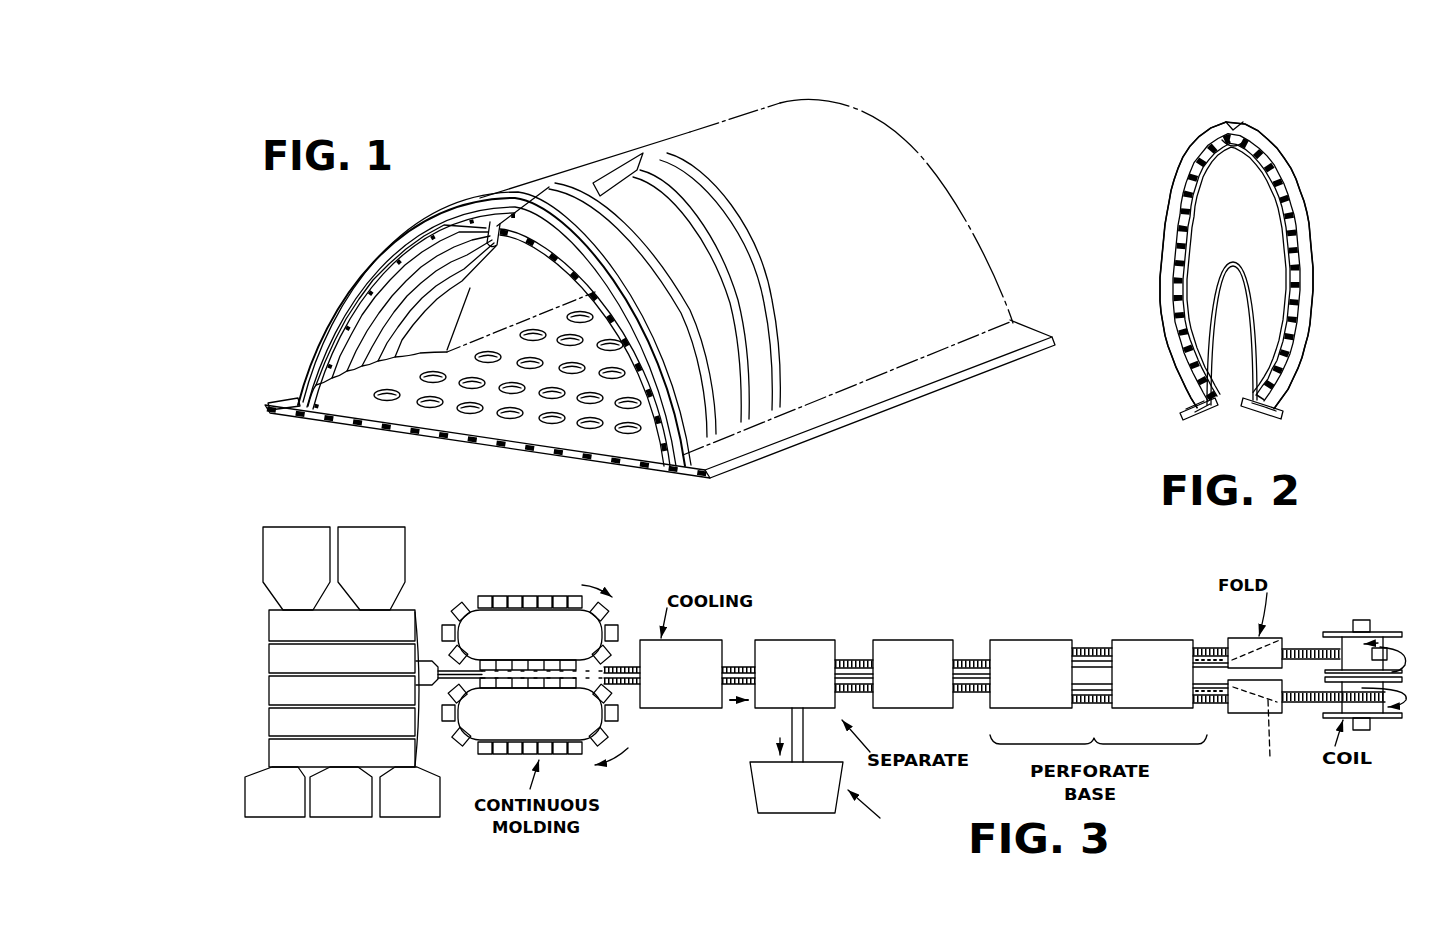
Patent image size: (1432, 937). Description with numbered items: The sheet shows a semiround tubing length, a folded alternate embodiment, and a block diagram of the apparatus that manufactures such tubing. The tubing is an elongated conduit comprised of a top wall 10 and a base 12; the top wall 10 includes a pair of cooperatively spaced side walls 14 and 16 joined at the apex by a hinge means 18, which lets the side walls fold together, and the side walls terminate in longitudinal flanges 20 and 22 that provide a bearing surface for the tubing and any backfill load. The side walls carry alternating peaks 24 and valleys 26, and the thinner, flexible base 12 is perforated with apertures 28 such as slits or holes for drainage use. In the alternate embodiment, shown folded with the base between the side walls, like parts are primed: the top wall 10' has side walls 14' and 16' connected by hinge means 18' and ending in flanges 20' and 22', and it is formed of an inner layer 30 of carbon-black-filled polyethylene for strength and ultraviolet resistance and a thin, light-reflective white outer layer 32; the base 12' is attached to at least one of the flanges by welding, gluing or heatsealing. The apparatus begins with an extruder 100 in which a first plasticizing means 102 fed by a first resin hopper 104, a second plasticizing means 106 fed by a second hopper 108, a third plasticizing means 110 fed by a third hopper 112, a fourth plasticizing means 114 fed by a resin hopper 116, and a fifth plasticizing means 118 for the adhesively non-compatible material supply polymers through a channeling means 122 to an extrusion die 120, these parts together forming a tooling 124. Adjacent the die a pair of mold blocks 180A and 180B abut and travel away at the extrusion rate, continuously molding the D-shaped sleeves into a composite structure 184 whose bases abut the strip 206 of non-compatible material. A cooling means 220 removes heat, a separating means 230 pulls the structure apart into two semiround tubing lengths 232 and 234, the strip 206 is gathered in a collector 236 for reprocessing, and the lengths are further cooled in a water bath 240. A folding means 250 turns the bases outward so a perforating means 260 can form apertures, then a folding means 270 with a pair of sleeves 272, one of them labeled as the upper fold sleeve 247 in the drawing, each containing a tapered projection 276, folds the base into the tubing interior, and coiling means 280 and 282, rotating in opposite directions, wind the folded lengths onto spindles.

In FIG. 1, the top wall 10 is at (451, 255).
In FIG. 3, the top wall 10 is at (1104, 673).
In FIG. 1, the base 12 is at (487, 449).
In FIG. 3, the base 12 is at (1066, 673).
In FIG. 1, the side wall 14 is at (494, 329).
In FIG. 1, the side wall 16 is at (855, 211).
In FIG. 1, the hinge means 18 is at (585, 176).
In FIG. 1, the flange 20 is at (276, 361).
In FIG. 1, the flange 22 is at (869, 406).
In FIG. 1, the peaks 24 is at (707, 258).
In FIG. 1, the valleys 26 is at (685, 195).
In FIG. 1, the apertures 28 is at (428, 408).
In FIG. 2, the top wall 10' is at (1261, 248).
In FIG. 2, the base 12' is at (1232, 296).
In FIG. 2, the side wall 14' is at (1157, 265).
In FIG. 2, the side wall 16' is at (1275, 265).
In FIG. 2, the hinge means 18' is at (1262, 116).
In FIG. 2, the flange 20' is at (1155, 393).
In FIG. 2, the flange 22' is at (1305, 394).
In FIG. 2, the inner layer 30 is at (1281, 234).
In FIG. 2, the outer layer 32 is at (1286, 200).
In FIG. 3, the extruder 100 is at (452, 831).
In FIG. 3, the first plasticizing means 102 is at (270, 620).
In FIG. 3, the first resin hopper 104 is at (300, 525).
In FIG. 3, the second plasticizing means 106 is at (270, 656).
In FIG. 3, the second hopper 108 is at (372, 525).
In FIG. 3, the third plasticizing means 110 is at (270, 689).
In FIG. 3, the third hopper 112 is at (268, 782).
In FIG. 3, the fourth plasticizing means 114 is at (270, 721).
In FIG. 3, the resin hopper 116 is at (332, 818).
In FIG. 3, the fifth plasticizing means 118 is at (270, 753).
In FIG. 3, the extrusion die 120 is at (440, 683).
In FIG. 3, the channeling means 122 is at (419, 727).
In FIG. 3, the tooling 124 is at (468, 597).
In FIG. 3, the mold block 180A is at (488, 662).
In FIG. 3, the mold block 180B is at (484, 684).
In FIG. 3, the molded composite structure 184 is at (623, 660).
In FIG. 3, the strip of adhesively non-compatible material 206 is at (788, 719).
In FIG. 3, the cooling means 220 is at (655, 709).
In FIG. 3, the separating means 230 is at (793, 640).
In FIG. 3, the semiround tubing length 232 is at (847, 650).
In FIG. 3, the semiround tubing length 234 is at (860, 694).
In FIG. 3, the collector 236 is at (755, 789).
In FIG. 3, the water bath 240 is at (905, 640).
In FIG. 3, the upper folding station 247 is at (1237, 658).
In FIG. 3, the folding means 250 is at (1000, 640).
In FIG. 3, the perforating means 260 is at (1133, 640).
In FIG. 3, the folding means 270 is at (1284, 636).
In FIG. 3, the sleeve 272 is at (1246, 714).
In FIG. 3, the tapered projection 276 is at (1283, 741).
In FIG. 3, the coiling means 280 is at (1382, 630).
In FIG. 3, the coiling means 282 is at (1390, 722).